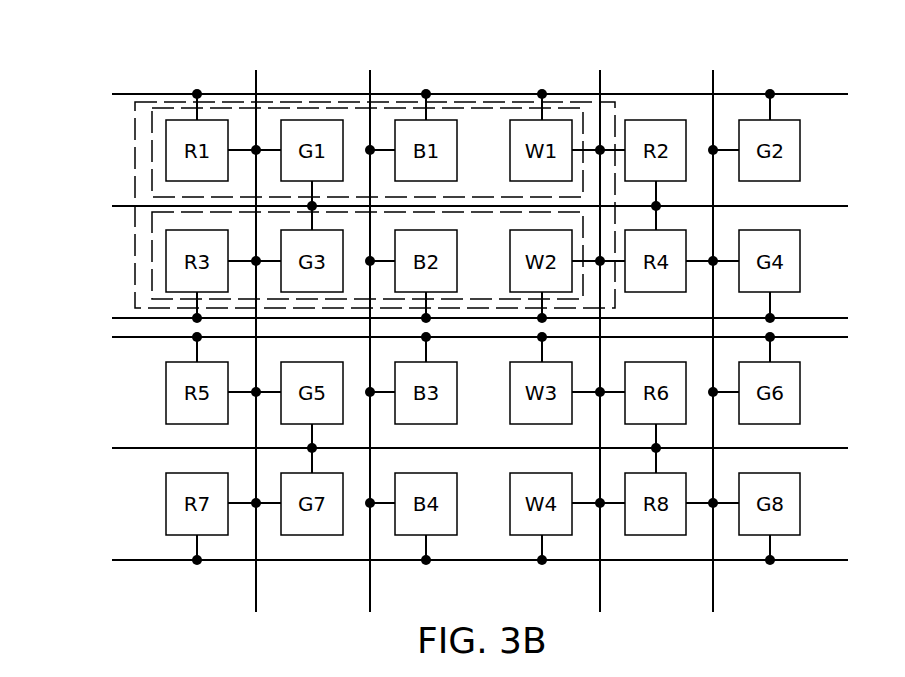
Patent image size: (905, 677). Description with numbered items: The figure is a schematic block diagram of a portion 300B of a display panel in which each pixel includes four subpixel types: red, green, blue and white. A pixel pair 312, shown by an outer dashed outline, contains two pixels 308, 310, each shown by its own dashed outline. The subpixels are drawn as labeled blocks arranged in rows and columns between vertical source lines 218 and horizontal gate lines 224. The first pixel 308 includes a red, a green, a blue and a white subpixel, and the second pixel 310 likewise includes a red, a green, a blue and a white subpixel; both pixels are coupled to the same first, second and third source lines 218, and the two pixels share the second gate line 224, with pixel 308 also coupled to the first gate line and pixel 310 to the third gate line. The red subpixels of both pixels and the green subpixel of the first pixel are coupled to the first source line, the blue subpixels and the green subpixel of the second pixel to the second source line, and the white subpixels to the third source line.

The portion of display panel 300B is at (170, 52).
The source lines 218 is at (485, 325).
The gate lines 224 is at (450, 326).
The pixel 308 is at (152, 128).
The pixel 310 is at (152, 238).
The pixel pair 312 is at (135, 271).